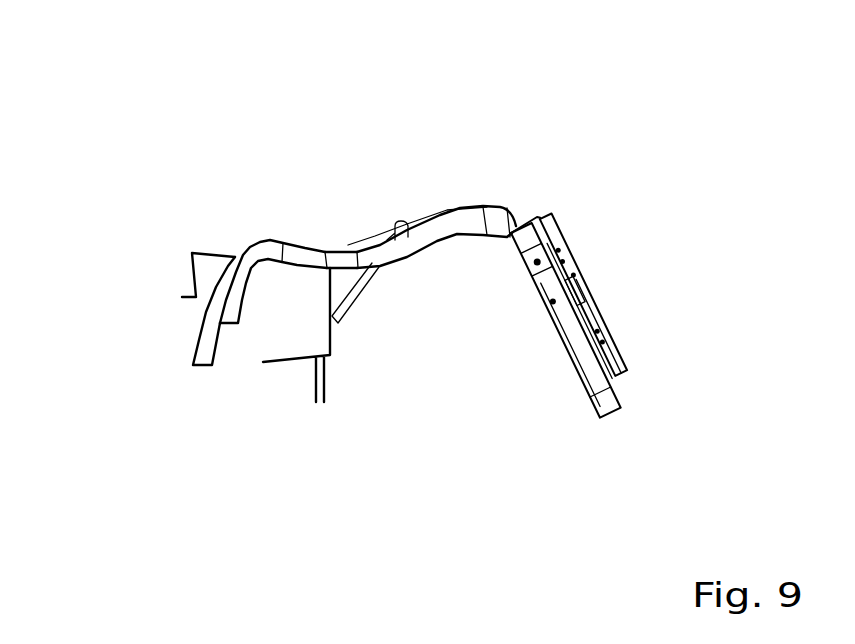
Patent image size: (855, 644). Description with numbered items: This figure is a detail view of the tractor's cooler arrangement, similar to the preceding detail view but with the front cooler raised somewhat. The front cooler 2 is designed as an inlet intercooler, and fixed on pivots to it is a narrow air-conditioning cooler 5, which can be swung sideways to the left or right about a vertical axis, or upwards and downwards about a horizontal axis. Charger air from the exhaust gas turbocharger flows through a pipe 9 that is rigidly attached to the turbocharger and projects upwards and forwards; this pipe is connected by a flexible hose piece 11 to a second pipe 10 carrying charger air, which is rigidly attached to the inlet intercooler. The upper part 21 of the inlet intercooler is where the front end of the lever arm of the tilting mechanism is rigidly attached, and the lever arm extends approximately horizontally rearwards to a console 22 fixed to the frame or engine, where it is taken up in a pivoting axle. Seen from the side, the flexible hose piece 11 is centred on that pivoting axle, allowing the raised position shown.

The front cooler 2 is at (549, 215).
The air-conditioning cooler 5 is at (575, 268).
The pipe carrying charger air 9 is at (254, 254).
The pipe carrying charger air 10 is at (433, 233).
The flexible hose piece 11 is at (312, 258).
The upper part of the inlet intercooler 21 is at (522, 238).
The console 22 is at (320, 249).